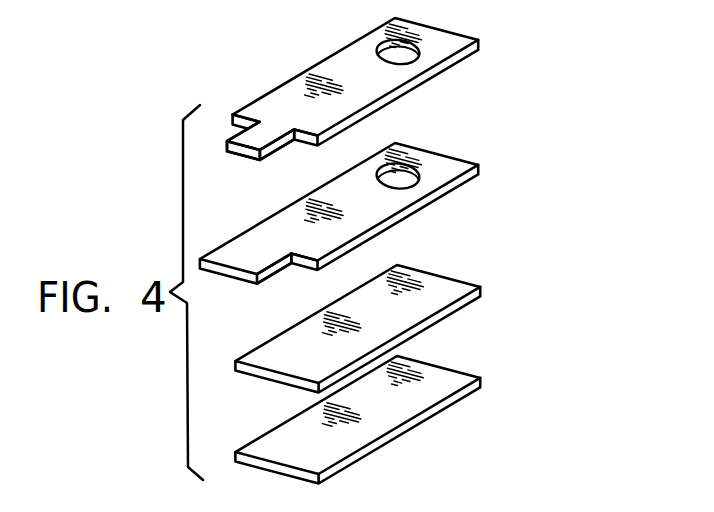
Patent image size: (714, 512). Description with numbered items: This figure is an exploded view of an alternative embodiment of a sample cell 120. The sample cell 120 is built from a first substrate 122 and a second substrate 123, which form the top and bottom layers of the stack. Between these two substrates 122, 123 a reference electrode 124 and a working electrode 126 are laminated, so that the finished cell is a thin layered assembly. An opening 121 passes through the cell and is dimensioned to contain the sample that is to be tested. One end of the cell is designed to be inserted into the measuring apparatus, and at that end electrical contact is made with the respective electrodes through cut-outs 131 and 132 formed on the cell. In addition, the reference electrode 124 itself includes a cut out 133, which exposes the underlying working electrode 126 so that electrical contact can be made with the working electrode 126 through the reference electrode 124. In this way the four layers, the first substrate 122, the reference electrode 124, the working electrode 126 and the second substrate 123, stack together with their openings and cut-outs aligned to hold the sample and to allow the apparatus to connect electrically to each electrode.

The sample cell 120 is at (506, 76).
The opening 121 is at (381, 48).
The first substrate 122 is at (438, 45).
The second substrate 123 is at (435, 377).
The reference electrode 124 is at (445, 165).
The working electrode 126 is at (422, 293).
The cut-out 131 is at (230, 133).
The cut-out 132 is at (290, 152).
The cut out 133 is at (295, 270).